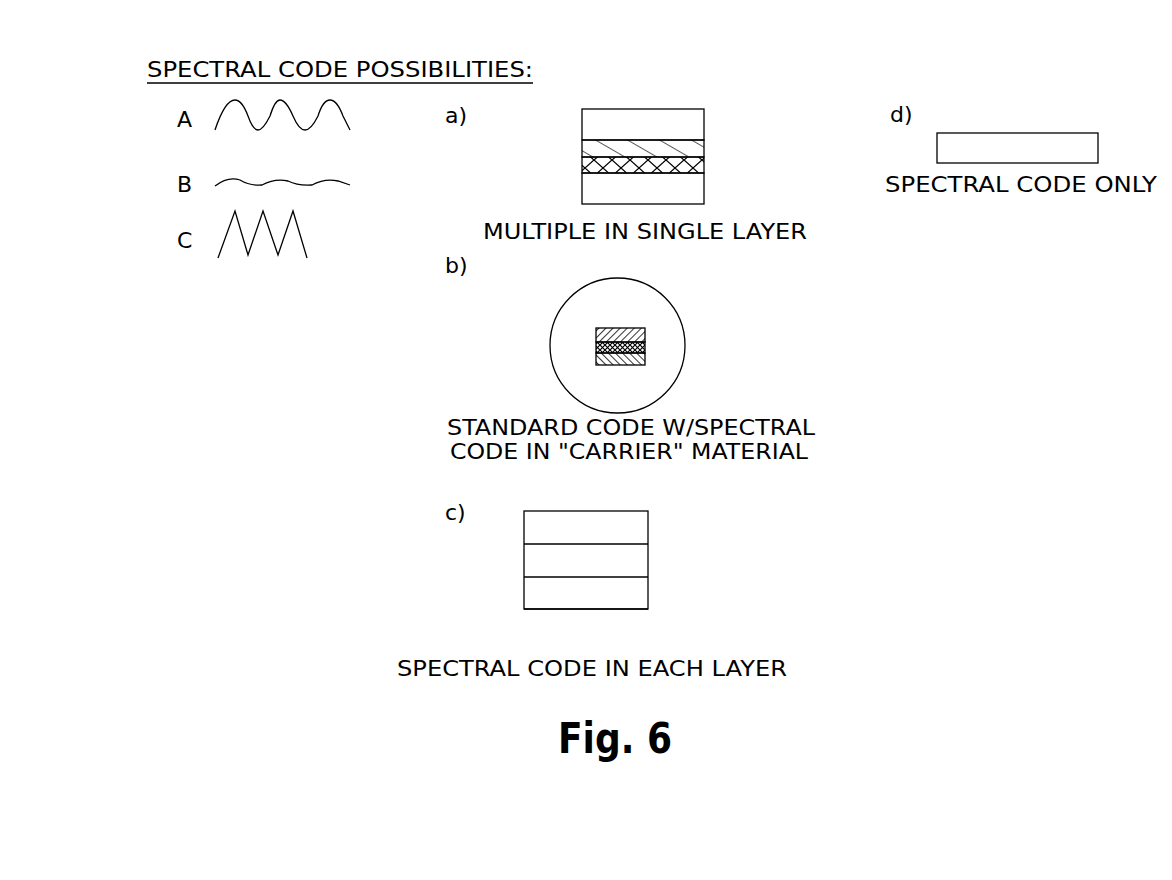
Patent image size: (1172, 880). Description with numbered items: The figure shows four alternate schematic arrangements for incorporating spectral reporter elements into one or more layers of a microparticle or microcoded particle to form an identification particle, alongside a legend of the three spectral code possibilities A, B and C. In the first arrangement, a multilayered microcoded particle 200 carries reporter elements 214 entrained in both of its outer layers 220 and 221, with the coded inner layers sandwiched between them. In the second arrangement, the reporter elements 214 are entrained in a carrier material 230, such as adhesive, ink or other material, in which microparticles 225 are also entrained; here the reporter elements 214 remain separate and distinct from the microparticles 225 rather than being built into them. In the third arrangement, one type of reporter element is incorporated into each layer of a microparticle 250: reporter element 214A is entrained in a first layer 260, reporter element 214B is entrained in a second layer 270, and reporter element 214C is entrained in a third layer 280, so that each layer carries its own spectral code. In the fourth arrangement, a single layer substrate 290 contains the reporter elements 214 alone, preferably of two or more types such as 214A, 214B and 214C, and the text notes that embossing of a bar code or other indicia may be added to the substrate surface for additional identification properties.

In FIG. 6A, the reporter elements 214 is at (667, 118).
In FIG. 6B, the reporter elements 214 is at (607, 388).
In FIG. 6D, the reporter elements 214 is at (1043, 135).
In FIG. 6A, the outer layer 220 is at (704, 125).
In FIG. 6A, the microcoded particle 200 is at (704, 173).
In FIG. 6A, the outer layer 221 is at (704, 187).
In FIG. 6B, the microparticles 225 is at (645, 340).
In FIG. 6B, the carrier material 230 is at (673, 350).
In FIG. 6C, the reporter element 214A is at (595, 527).
In FIG. 6C, the reporter element 214B is at (593, 562).
In FIG. 6C, the reporter element 214C is at (588, 598).
In FIG. 6C, the microparticle 250 is at (524, 563).
In FIG. 6C, the first layer 260 is at (648, 525).
In FIG. 6C, the second layer 270 is at (648, 562).
In FIG. 6C, the third layer 280 is at (648, 593).
In FIG. 6D, the single layer substrate 290 is at (1098, 147).